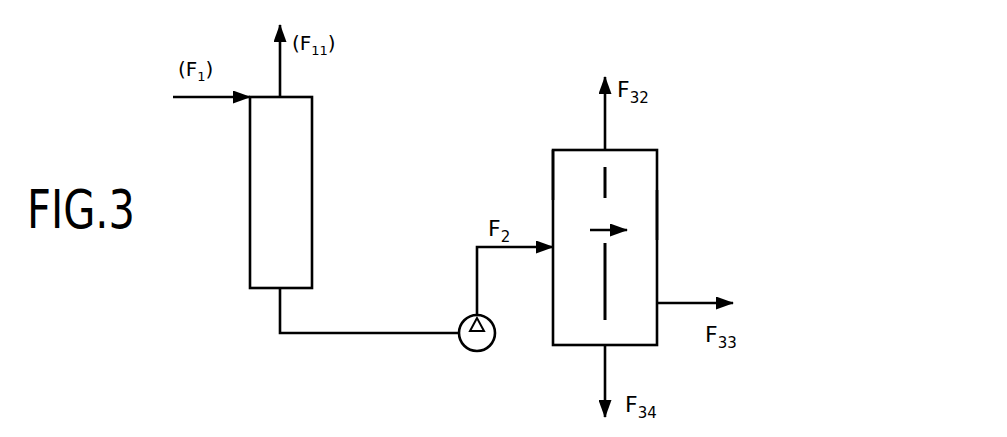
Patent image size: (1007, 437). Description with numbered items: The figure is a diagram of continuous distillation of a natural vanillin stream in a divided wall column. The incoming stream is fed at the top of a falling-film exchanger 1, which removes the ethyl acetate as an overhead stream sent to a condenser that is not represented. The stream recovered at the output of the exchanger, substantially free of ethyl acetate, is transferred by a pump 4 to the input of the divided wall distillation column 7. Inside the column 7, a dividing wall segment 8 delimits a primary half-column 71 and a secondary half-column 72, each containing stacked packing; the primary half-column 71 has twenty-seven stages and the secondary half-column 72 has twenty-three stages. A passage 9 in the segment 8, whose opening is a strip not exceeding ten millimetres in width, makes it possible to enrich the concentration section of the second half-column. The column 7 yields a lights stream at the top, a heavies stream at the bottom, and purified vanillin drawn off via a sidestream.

The falling-film exchanger 1 is at (271, 205).
The pump 4 is at (486, 339).
The divided wall distillation column 7 is at (657, 248).
The primary half-column 71 is at (563, 176).
The secondary half-column 72 is at (645, 218).
The dividing wall segment 8 is at (608, 199).
The passage 9 is at (600, 222).